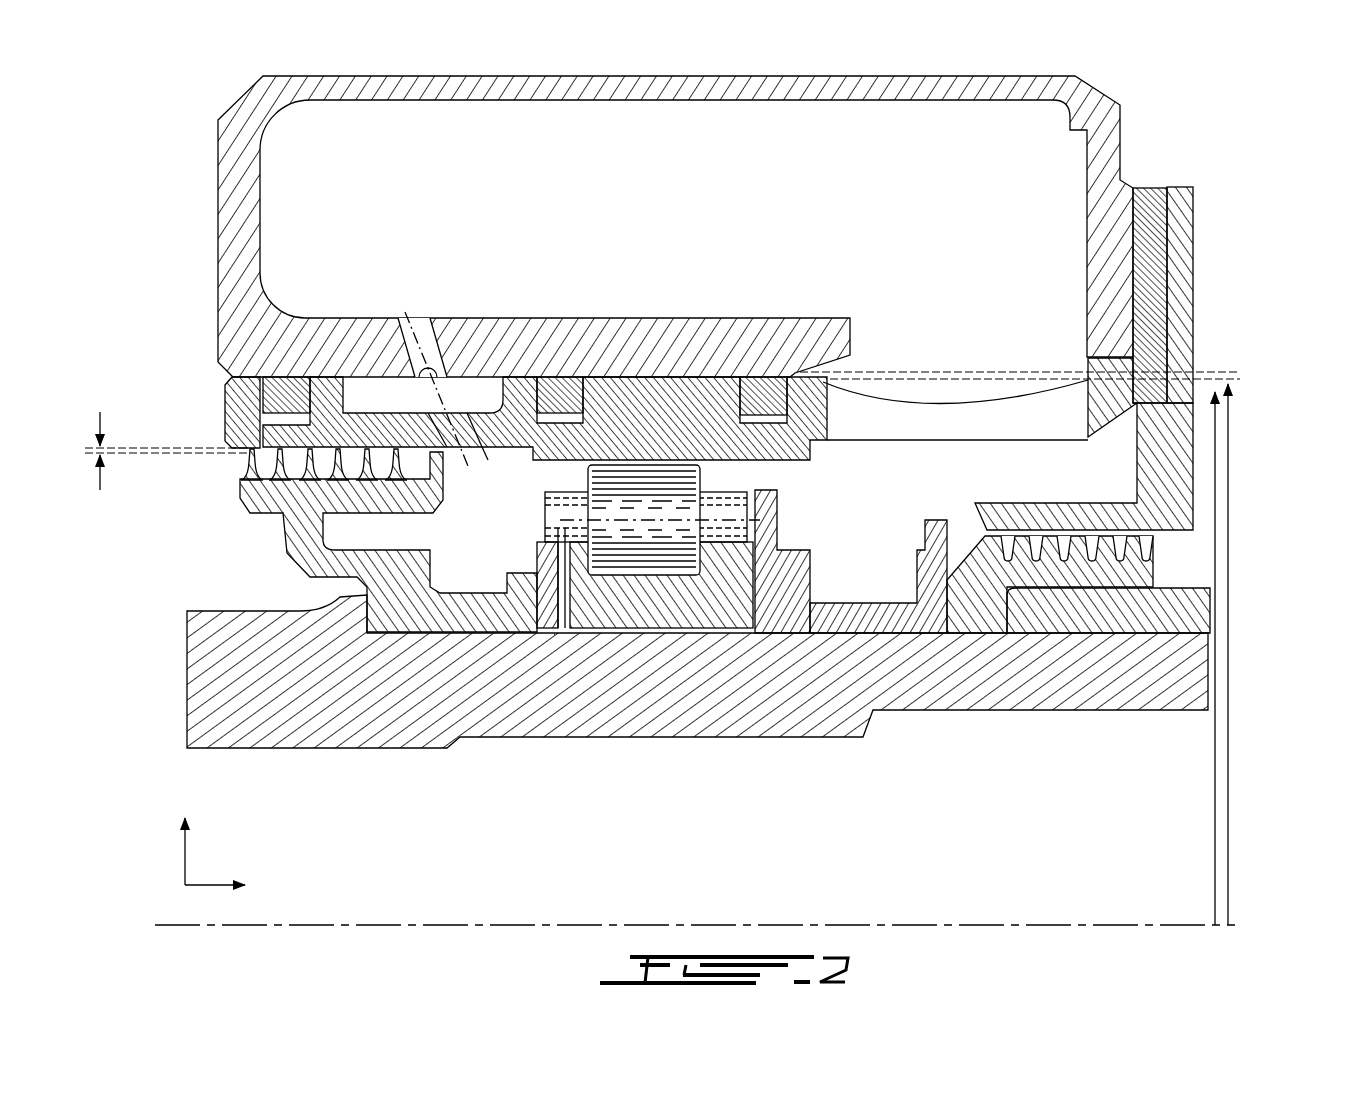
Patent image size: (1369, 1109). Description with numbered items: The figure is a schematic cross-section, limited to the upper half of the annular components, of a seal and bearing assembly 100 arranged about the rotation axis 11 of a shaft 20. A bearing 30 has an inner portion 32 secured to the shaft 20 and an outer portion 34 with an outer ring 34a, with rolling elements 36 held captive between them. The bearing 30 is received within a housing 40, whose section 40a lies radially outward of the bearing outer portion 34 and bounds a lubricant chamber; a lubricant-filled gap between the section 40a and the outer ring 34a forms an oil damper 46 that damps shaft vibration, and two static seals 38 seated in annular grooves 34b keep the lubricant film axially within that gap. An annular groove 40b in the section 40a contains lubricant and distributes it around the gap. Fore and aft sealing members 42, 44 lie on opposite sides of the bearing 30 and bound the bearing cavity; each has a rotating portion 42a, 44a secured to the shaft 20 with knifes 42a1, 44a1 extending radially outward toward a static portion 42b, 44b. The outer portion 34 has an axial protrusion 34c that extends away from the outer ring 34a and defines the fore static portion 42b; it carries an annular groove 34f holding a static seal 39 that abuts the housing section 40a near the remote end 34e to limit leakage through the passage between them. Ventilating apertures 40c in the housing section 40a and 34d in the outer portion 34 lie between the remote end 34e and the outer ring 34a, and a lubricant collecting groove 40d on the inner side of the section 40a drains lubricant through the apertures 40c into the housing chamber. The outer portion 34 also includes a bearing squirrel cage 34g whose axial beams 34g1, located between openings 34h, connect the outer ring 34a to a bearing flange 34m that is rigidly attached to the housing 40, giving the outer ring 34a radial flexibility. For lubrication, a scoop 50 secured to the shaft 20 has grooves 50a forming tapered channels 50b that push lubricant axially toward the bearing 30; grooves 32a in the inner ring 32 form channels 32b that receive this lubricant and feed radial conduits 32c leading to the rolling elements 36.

The seal and bearing assembly 100 is at (1190, 125).
The housing 40 is at (895, 100).
The housing section 40a is at (815, 318).
The annular groove 40b is at (712, 376).
The housing ventilating apertures 40c is at (447, 320).
The lubricant collecting groove 40d is at (490, 318).
The bearing outer portion 34 is at (792, 470).
The bearing outer ring 34a is at (670, 363).
The annular grooves 34b is at (742, 430).
The protrusion 34c is at (370, 445).
The outer portion ventilating apertures 34d is at (550, 400).
The remote end 34e is at (222, 400).
The annular groove 34f is at (318, 410).
The bearing squirrel cage 34g is at (1012, 444).
The axial beams 34g1 is at (1028, 410).
The openings 34h is at (955, 408).
The bearing flange 34m is at (1155, 228).
The rolling elements 36 is at (660, 520).
The static seals 38 is at (760, 378).
The static seal 39 is at (277, 395).
The oil damper 46 is at (640, 363).
The fore sealing member 42 is at (230, 523).
The rotating portion 42a is at (405, 598).
The knifes 42a1 is at (402, 455).
The static portion 42b is at (232, 448).
The aft sealing member 44 is at (1198, 528).
The rotating portion 44a is at (975, 605).
The knifes 44a1 is at (1150, 545).
The static portion 44b is at (1050, 515).
The scoop 50 is at (917, 555).
The grooves 50a is at (857, 603).
The channels 50b is at (838, 640).
The bearing inner portion 32 is at (585, 600).
The grooves 32a is at (690, 618).
The channels 32b is at (686, 640).
The radial conduits 32c is at (545, 550).
The bearing 30 is at (640, 648).
The shaft 20 is at (1082, 712).
The rotation axis 11 is at (1065, 922).